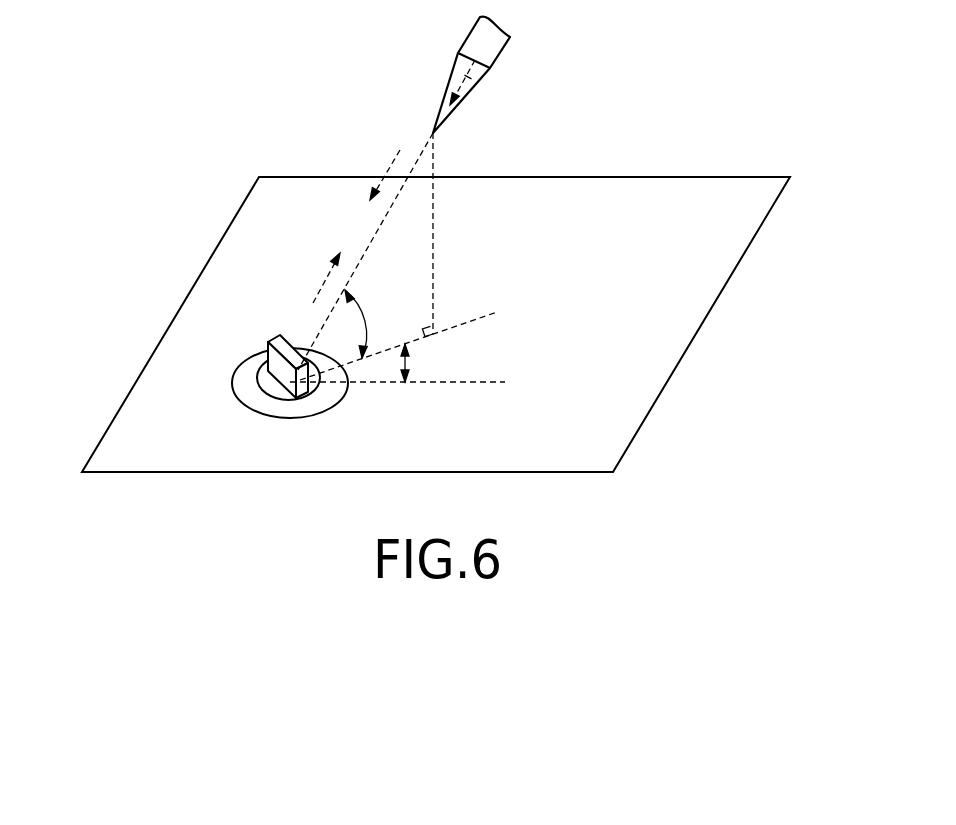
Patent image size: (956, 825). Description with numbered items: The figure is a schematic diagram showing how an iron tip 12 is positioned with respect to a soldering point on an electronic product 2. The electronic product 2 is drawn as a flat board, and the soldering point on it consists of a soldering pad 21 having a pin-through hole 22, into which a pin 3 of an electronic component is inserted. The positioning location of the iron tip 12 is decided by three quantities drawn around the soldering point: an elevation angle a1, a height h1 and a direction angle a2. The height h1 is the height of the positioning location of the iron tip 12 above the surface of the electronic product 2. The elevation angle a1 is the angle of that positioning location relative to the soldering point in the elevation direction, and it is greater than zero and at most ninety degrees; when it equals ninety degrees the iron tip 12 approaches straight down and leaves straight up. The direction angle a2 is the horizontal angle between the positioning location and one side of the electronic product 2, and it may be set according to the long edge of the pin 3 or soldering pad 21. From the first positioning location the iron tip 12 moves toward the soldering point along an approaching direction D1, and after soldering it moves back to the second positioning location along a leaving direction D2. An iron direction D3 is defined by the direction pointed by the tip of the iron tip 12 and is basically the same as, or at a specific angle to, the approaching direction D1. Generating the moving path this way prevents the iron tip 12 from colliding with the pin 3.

The electronic product 2 is at (615, 185).
The pin 3 is at (267, 347).
The iron tip 12 is at (497, 47).
The soldering pad 21 is at (240, 376).
The pin-through hole 22 is at (256, 362).
The approaching direction D1 is at (391, 163).
The leaving direction D2 is at (321, 279).
The iron direction D3 is at (478, 86).
The height h1 is at (442, 235).
The elevation angle a1 is at (369, 324).
The direction angle a2 is at (419, 363).